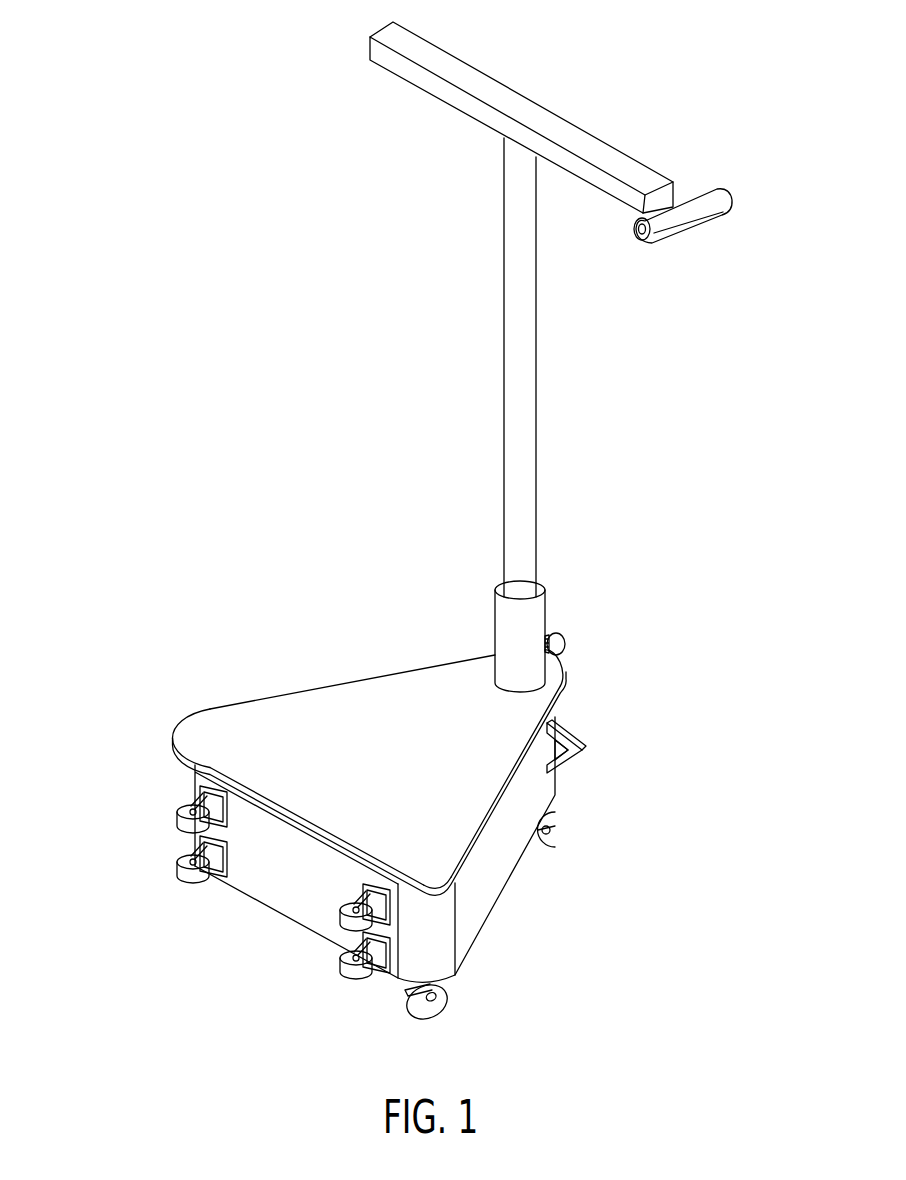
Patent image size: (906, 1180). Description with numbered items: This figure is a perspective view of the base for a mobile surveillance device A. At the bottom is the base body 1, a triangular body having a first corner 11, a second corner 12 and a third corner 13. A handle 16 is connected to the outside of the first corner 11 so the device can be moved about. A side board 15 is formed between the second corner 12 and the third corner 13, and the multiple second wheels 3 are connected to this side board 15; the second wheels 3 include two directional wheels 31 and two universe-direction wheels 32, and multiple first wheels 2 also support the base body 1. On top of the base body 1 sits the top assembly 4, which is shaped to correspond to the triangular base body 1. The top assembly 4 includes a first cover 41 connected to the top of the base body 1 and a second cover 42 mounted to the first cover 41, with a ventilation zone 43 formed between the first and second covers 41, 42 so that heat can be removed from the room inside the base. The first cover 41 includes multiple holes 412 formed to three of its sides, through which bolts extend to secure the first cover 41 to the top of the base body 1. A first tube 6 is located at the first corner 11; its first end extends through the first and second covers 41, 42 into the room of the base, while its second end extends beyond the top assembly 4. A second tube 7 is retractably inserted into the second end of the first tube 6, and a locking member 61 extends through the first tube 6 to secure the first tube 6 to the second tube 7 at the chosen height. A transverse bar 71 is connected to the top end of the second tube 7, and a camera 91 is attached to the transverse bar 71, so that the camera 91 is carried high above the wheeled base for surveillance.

The mobile surveillance device A is at (178, 376).
The base body 1 is at (391, 864).
The first corner 11 is at (557, 783).
The second corner 12 is at (195, 793).
The third corner 13 is at (442, 935).
The side board 15 is at (283, 897).
The handle 16 is at (568, 731).
The first wheels 2 is at (570, 837).
The second wheels 3 is at (272, 916).
The directional wheels 31 is at (176, 820).
The universe-direction wheels 32 is at (337, 968).
The top assembly 4 is at (389, 756).
The first cover 41 is at (480, 857).
The second cover 42 is at (268, 700).
The ventilation zone 43 is at (513, 796).
The holes 412 is at (358, 868).
The first tube 6 is at (482, 616).
The locking member 61 is at (568, 651).
The second tube 7 is at (488, 341).
The transverse bar 71 is at (420, 90).
The camera 91 is at (687, 243).